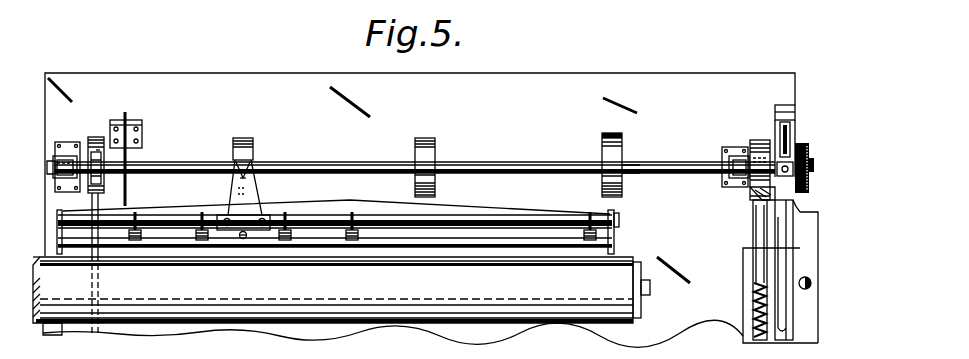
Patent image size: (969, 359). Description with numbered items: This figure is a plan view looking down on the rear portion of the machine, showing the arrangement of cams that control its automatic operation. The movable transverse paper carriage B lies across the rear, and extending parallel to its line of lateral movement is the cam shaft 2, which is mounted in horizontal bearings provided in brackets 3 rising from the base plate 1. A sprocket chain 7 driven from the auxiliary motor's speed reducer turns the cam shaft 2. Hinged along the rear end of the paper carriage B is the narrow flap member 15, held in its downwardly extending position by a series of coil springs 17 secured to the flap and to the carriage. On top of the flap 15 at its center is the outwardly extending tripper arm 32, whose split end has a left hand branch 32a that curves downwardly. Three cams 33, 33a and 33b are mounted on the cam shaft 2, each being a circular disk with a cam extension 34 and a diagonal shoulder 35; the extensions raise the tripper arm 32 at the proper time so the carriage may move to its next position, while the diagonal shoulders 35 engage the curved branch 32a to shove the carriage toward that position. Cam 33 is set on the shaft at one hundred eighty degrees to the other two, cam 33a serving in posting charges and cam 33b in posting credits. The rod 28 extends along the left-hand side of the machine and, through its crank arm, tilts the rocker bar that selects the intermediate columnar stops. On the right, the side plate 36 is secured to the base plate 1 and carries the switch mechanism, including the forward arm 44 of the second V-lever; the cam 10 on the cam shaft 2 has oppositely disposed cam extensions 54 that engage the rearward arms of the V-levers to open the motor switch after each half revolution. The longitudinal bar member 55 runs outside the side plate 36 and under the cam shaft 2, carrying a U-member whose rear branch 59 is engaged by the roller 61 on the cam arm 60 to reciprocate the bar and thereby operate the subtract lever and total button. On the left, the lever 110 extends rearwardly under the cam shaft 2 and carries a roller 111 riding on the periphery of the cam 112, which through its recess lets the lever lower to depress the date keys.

The base plate 1 is at (667, 80).
The cam shaft 2 is at (500, 164).
The brackets 3 is at (76, 155).
The sprocket chain 7 is at (801, 194).
The cam 10 is at (754, 140).
The flap member 15 is at (358, 212).
The coil springs 17 is at (203, 215).
The rod 28 is at (126, 115).
The tripper arm 32 is at (256, 208).
The left hand branch 32a is at (240, 165).
The cam 33 is at (624, 158).
The cam 33a is at (415, 163).
The cam 33b is at (249, 196).
The cam extension 34 is at (613, 137).
The diagonal shoulder 35 is at (604, 137).
The side plate 36 is at (745, 314).
The forward arm 44 is at (751, 283).
The cam extensions 54 is at (755, 192).
The longitudinal bar member 55 is at (793, 108).
The rear branch 59 is at (784, 106).
The cam arm 60 is at (796, 141).
The roller 61 is at (797, 120).
The lever 110 is at (99, 203).
The roller 111 is at (104, 160).
The cam 112 is at (97, 137).
The paper carriage B is at (615, 242).